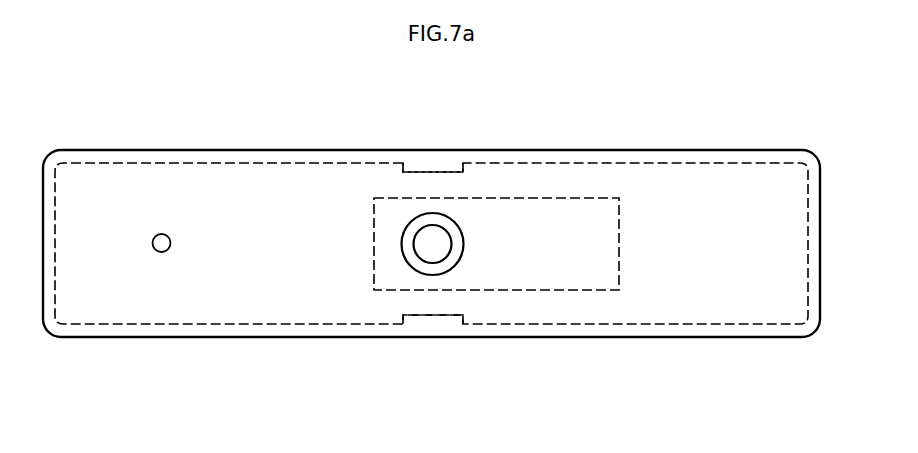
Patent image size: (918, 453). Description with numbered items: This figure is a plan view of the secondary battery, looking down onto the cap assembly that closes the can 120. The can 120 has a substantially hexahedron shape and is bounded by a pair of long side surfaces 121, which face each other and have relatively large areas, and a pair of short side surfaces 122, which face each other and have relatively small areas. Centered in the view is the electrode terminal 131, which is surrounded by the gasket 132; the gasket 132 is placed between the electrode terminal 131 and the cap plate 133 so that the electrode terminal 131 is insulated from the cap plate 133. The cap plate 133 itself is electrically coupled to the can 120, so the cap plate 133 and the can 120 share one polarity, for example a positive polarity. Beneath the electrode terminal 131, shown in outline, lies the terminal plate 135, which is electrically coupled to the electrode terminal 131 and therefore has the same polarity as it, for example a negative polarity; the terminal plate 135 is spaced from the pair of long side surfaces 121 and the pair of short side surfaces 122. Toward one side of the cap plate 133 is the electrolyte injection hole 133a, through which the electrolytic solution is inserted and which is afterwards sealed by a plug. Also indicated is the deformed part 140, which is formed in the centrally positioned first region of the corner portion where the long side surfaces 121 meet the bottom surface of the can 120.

The can 120 is at (454, 267).
The long side surfaces 121 is at (431, 246).
The short side surfaces 122 is at (817, 272).
The electrode terminal 131 is at (432, 231).
The gasket 132 is at (406, 243).
The cap plate 133 is at (718, 180).
The electrolyte injection hole 133a is at (160, 234).
The terminal plate 135 is at (547, 210).
The deformed part 140 is at (432, 317).